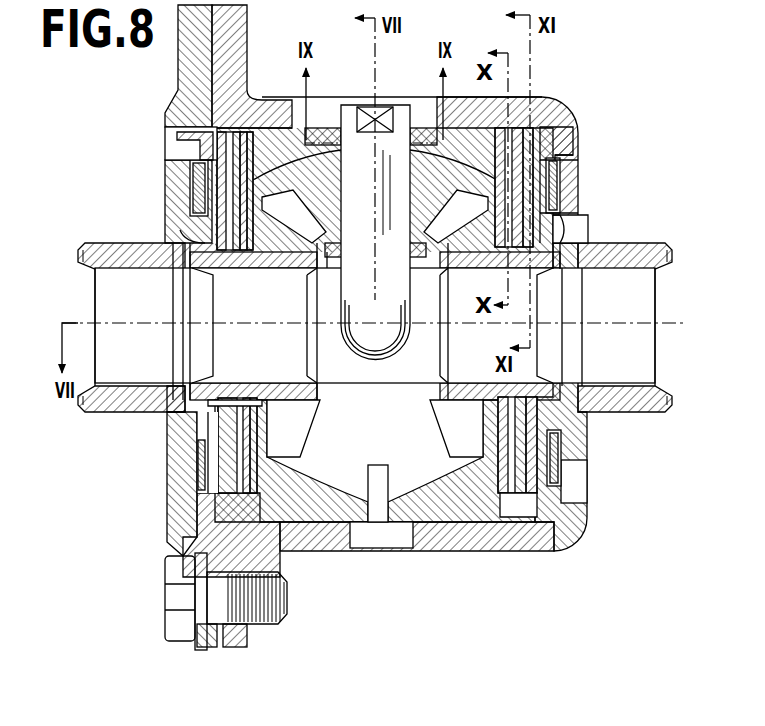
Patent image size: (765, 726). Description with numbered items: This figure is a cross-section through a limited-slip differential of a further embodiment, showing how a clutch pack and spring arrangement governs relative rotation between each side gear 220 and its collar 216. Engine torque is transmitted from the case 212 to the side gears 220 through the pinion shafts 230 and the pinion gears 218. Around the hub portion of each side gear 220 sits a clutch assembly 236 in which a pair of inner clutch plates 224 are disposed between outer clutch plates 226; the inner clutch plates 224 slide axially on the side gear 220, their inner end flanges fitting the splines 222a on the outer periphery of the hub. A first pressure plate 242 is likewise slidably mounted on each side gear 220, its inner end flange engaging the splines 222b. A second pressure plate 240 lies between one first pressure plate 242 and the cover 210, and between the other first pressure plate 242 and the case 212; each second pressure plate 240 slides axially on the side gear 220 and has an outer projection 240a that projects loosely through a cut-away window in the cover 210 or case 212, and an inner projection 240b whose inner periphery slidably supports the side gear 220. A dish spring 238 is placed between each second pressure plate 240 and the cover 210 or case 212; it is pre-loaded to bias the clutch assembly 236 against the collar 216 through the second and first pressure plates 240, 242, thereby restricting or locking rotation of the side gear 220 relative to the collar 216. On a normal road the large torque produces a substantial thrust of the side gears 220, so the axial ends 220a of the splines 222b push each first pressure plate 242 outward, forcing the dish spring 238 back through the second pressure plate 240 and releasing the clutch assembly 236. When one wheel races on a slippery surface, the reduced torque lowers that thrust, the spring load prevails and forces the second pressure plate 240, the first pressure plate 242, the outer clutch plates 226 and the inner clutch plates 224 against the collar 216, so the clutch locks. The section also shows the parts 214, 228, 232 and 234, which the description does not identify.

The cover 210 is at (185, 489).
The case 212 is at (445, 551).
The fastening bolt and nut 214 is at (277, 626).
The collar 216 is at (332, 511).
The pinion gear 218 is at (420, 213).
The side gear 220 is at (290, 407).
The axial ends of the splines 220a is at (230, 403).
The splines 222a is at (543, 210).
The splines 222b is at (563, 236).
The inner clutch plate 224 is at (250, 181).
The outer clutch plate 226 is at (240, 125).
The housing top cover 228 is at (563, 118).
The pinion shaft 230 is at (400, 355).
The stem bearing 232 is at (356, 132).
The seat sleeve 234 is at (317, 255).
The clutch assembly 236 is at (520, 505).
The dish spring 238 is at (195, 196).
The second pressure plate 240 is at (553, 137).
The outer projection 240a is at (575, 152).
The inner projection 240b is at (575, 245).
The first pressure plate 242 is at (213, 217).